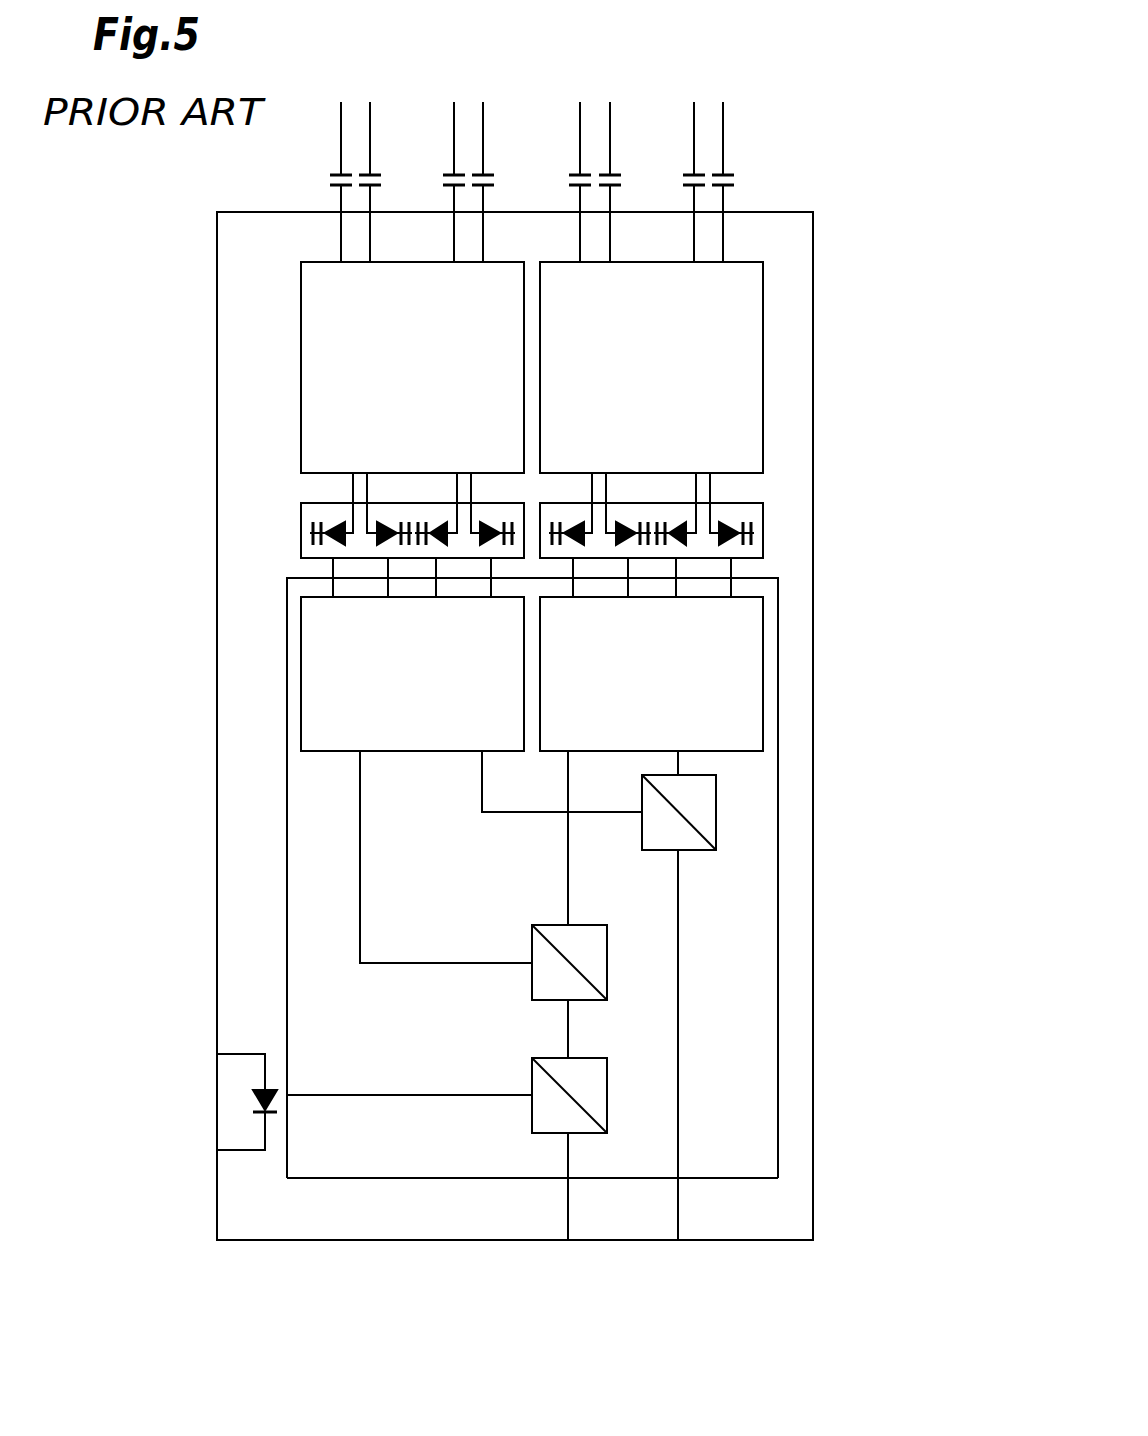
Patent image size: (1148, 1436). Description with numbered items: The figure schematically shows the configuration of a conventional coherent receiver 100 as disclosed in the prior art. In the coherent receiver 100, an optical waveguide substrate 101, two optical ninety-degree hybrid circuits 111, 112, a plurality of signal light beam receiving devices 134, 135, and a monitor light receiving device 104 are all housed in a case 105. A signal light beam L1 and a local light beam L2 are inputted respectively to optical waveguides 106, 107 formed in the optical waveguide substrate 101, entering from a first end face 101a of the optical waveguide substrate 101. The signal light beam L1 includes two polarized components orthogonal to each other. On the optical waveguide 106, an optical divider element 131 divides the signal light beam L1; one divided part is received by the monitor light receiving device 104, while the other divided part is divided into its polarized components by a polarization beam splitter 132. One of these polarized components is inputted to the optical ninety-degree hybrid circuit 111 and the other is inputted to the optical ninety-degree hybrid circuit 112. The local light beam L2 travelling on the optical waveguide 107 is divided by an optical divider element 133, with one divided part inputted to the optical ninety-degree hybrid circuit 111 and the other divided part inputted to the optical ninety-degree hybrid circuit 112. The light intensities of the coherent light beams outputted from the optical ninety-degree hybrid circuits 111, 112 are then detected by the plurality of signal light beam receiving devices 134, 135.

The coherent receiver 100 is at (868, 92).
The case 105 is at (813, 325).
The optical waveguide substrate 101 is at (778, 1010).
The first end face 101a is at (363, 1182).
The monitor light receiving device 104 is at (255, 1100).
The optical waveguide 106 is at (568, 1158).
The optical waveguide 107 is at (678, 1115).
The optical 90-degree hybrid circuit 111 is at (301, 690).
The optical 90-degree hybrid circuit 112 is at (763, 678).
The optical divider element 131 is at (607, 1058).
The polarization beam splitter 132 is at (607, 925).
The optical divider element 133 is at (716, 850).
The signal light beam receiving device 134 is at (317, 507).
The signal light beam receiving device 135 is at (745, 508).
The signal light beam L1 is at (568, 1205).
The local light beam L2 is at (678, 1205).